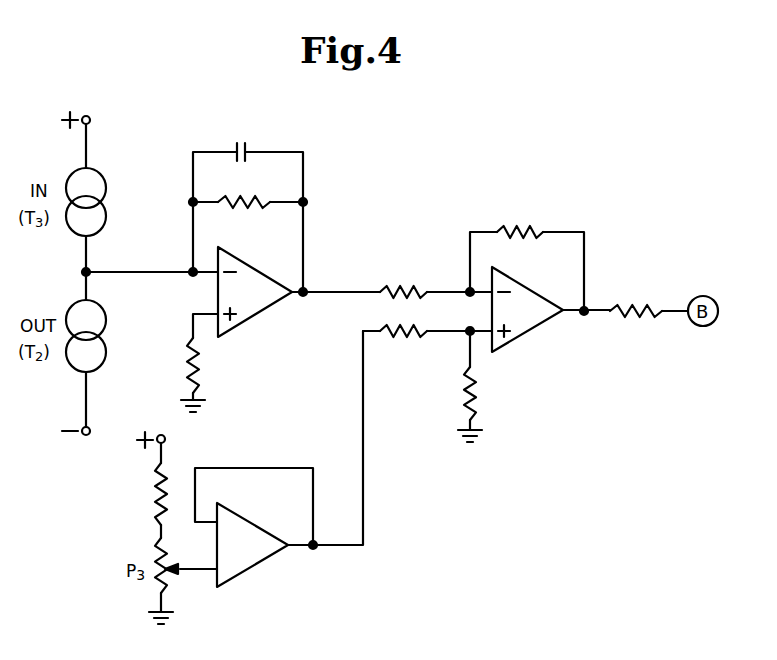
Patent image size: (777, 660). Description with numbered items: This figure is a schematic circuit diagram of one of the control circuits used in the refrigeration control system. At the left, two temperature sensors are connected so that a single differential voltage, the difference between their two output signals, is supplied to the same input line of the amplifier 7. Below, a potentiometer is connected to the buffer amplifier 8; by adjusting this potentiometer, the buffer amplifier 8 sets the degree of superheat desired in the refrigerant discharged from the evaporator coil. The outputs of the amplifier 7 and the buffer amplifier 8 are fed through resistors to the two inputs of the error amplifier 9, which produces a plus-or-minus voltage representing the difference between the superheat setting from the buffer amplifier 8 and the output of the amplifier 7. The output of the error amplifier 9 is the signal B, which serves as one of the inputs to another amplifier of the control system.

The amplifier A7 7 is at (255, 292).
The buffer amplifier A8 8 is at (252, 545).
The error amplifier A9 9 is at (527, 309).